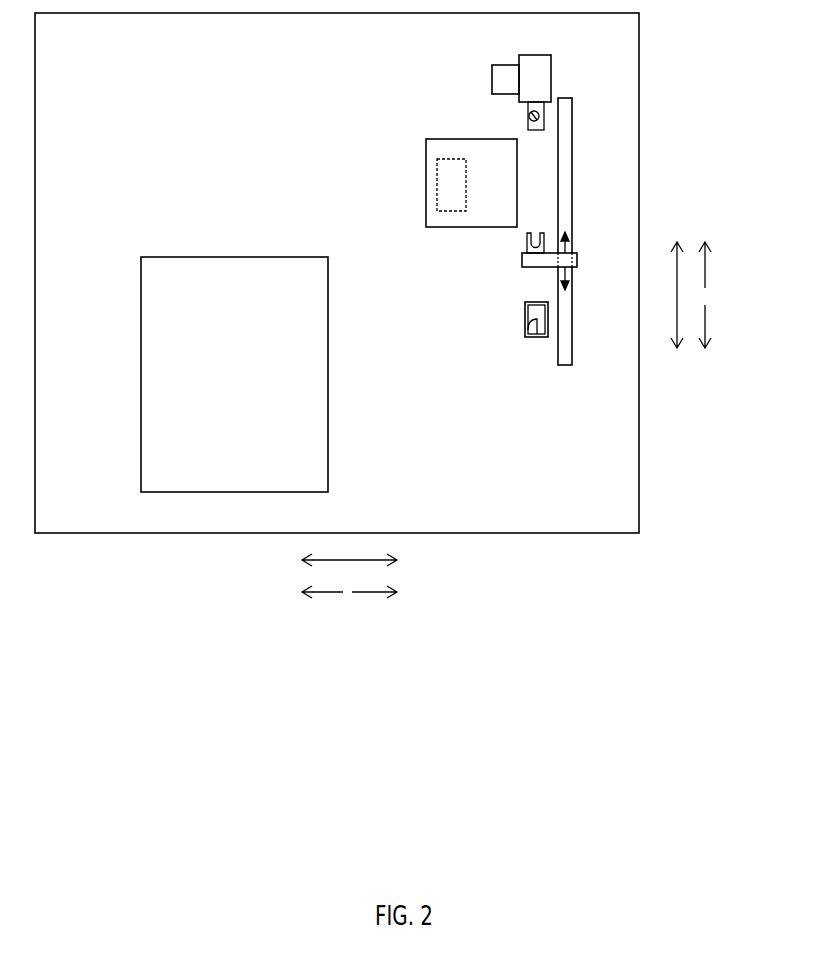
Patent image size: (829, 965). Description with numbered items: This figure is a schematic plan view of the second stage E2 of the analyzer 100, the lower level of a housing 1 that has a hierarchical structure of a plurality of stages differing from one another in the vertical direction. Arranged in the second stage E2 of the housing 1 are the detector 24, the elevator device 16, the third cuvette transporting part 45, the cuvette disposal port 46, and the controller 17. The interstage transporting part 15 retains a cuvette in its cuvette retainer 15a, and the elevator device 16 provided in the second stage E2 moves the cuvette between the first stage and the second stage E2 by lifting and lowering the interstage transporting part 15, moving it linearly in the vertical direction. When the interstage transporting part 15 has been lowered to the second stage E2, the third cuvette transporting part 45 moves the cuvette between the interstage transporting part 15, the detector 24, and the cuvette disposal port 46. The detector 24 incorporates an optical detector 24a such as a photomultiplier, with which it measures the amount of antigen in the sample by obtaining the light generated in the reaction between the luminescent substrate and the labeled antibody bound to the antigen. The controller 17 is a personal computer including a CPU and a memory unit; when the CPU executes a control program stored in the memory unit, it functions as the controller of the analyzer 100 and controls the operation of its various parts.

The housing 1 is at (659, 81).
The analyzer 100 is at (376, 305).
The second stage E2 is at (617, 155).
The interstage transporting part 15 is at (503, 117).
The cuvette retainer 15a is at (529, 111).
The elevator device 16 is at (551, 78).
The controller 17 is at (330, 358).
The detector 24 is at (471, 206).
The optical detector 24a is at (466, 192).
The third cuvette transporting part 45 is at (577, 251).
The cuvette disposal port 46 is at (528, 317).